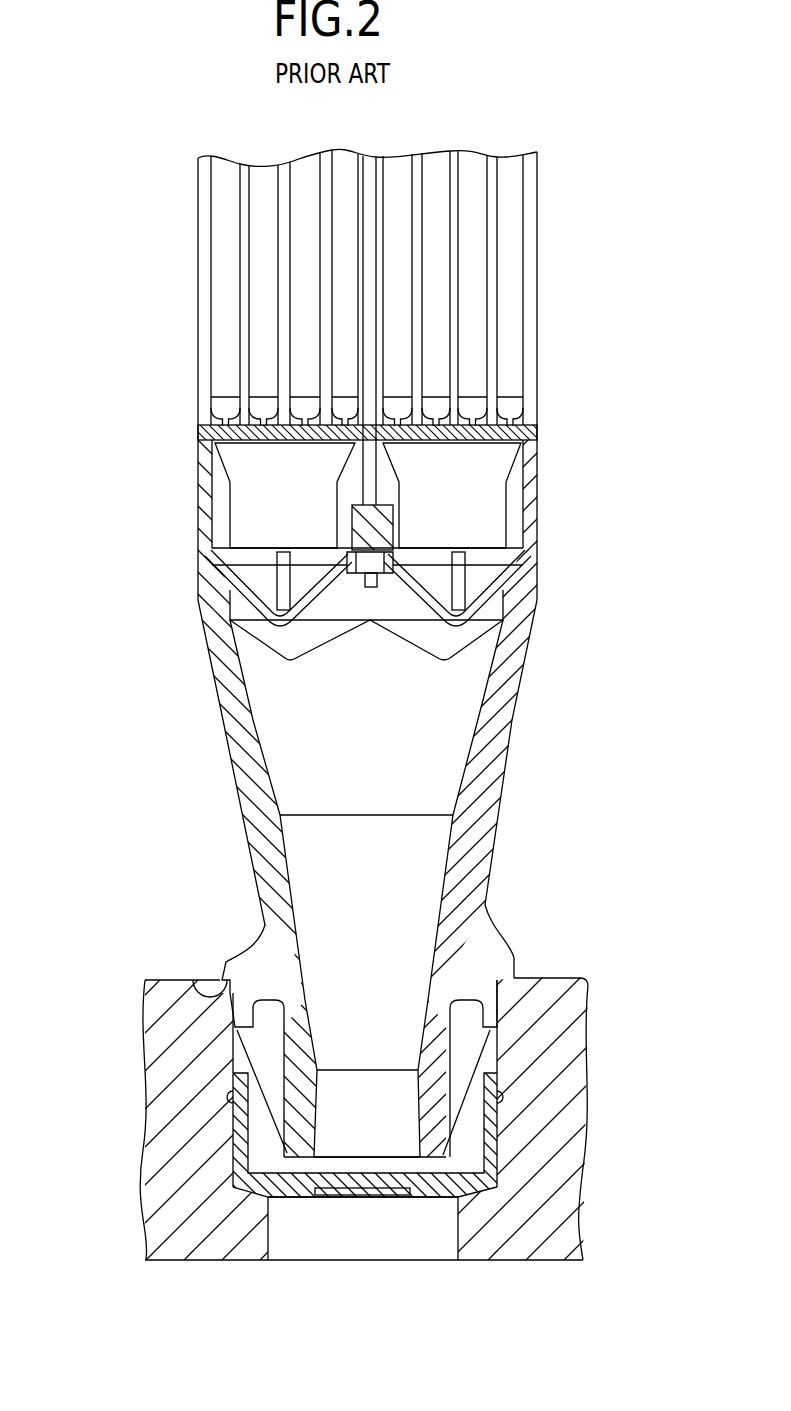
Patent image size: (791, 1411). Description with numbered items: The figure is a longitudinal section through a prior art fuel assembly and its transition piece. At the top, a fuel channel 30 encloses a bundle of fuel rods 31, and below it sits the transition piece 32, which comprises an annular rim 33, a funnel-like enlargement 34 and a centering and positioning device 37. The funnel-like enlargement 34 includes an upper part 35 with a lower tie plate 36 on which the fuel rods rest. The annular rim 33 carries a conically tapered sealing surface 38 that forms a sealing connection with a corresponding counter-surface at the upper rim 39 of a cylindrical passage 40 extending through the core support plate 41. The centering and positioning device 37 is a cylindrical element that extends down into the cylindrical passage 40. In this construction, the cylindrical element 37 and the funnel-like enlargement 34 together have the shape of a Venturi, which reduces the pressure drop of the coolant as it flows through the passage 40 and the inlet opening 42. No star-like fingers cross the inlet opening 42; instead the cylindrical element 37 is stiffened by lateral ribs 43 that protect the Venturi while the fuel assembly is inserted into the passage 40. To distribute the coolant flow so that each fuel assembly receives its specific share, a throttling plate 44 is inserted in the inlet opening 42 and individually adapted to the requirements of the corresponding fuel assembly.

The fuel channel 30 is at (538, 330).
The bundle of fuel rods 31 is at (512, 283).
The transition piece 32 is at (537, 583).
The annular rim 33 is at (486, 950).
The funnel-like enlargement 34 is at (523, 670).
The upper part 35 is at (537, 490).
The lower tie plate 36 is at (537, 413).
The centering and positioning device 37 is at (437, 1037).
The conically tapered sealing surface 38 is at (518, 962).
The upper rim 39 is at (188, 990).
The cylindrical passage 40 is at (293, 1240).
The core support plate 41 is at (147, 1003).
The inlet opening 42 is at (378, 1140).
The lateral ribs 43 is at (458, 1105).
The throttling plate 44 is at (433, 1187).